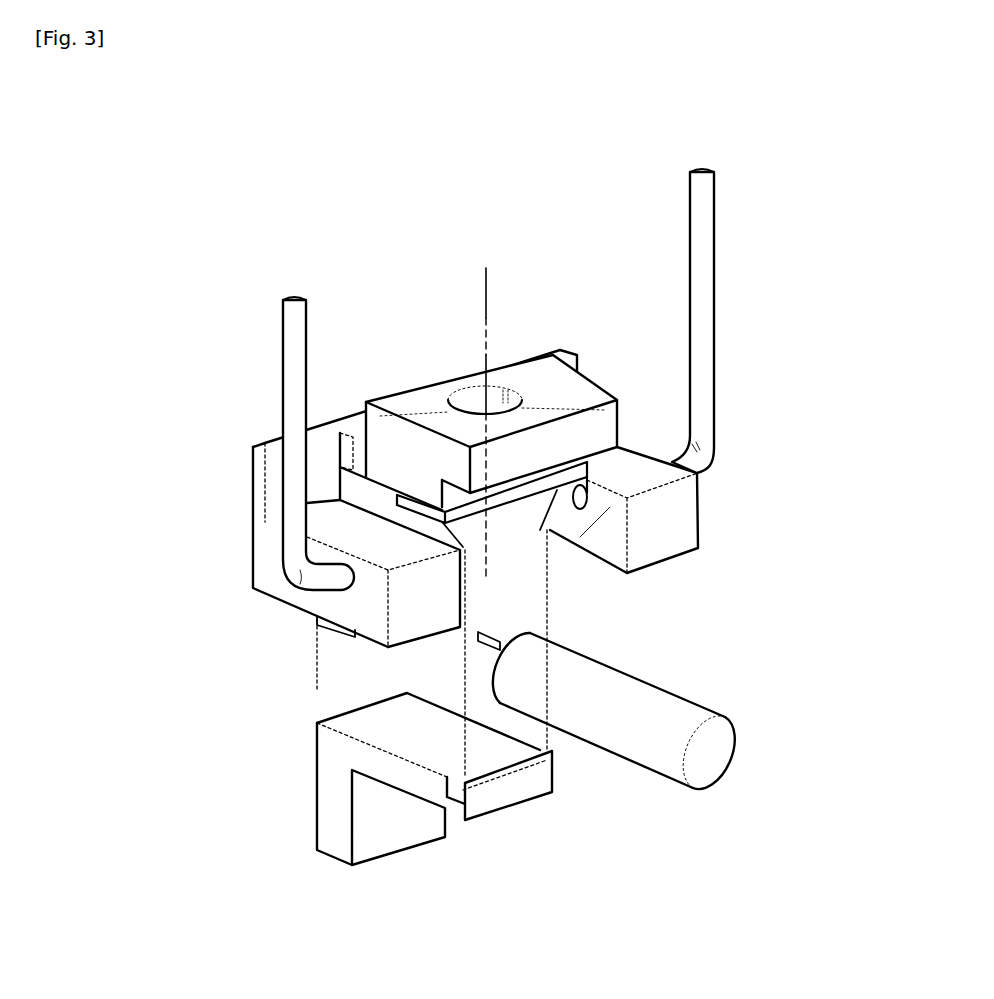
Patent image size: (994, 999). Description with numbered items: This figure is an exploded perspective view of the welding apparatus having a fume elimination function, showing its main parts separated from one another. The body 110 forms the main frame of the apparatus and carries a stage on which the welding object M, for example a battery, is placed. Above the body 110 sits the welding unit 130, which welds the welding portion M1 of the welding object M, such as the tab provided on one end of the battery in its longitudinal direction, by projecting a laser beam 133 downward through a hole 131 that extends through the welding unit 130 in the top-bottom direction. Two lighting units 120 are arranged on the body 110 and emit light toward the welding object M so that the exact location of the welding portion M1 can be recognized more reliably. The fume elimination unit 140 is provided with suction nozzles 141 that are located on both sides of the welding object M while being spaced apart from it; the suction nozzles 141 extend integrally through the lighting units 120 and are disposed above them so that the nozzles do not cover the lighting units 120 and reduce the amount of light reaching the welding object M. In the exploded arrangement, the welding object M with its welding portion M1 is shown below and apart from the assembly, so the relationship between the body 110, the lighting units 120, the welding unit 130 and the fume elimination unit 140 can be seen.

The body 110 is at (257, 495).
The lighting units 120 is at (478, 590).
The welding unit 130 is at (438, 381).
The hole 131 is at (497, 388).
The laser beam 133 is at (488, 318).
The fume elimination unit 140 is at (283, 373).
The suction nozzles 141 is at (590, 510).
The welding object M is at (713, 755).
The welding portion M1 is at (500, 642).